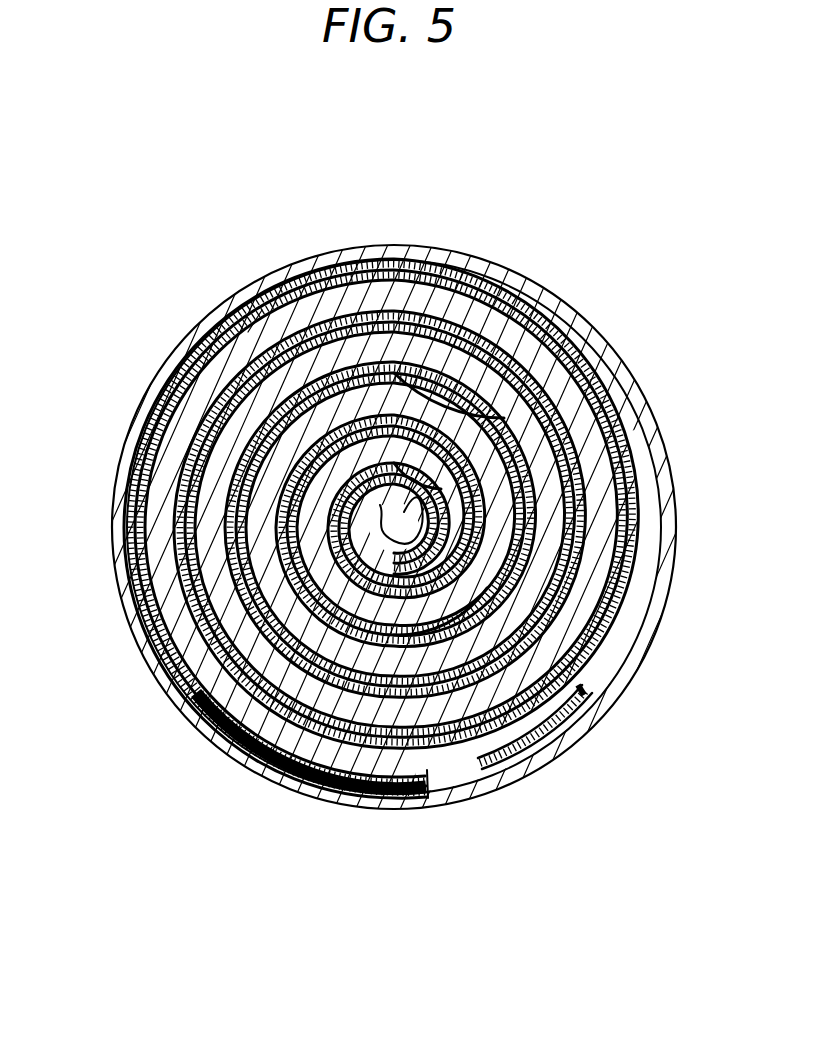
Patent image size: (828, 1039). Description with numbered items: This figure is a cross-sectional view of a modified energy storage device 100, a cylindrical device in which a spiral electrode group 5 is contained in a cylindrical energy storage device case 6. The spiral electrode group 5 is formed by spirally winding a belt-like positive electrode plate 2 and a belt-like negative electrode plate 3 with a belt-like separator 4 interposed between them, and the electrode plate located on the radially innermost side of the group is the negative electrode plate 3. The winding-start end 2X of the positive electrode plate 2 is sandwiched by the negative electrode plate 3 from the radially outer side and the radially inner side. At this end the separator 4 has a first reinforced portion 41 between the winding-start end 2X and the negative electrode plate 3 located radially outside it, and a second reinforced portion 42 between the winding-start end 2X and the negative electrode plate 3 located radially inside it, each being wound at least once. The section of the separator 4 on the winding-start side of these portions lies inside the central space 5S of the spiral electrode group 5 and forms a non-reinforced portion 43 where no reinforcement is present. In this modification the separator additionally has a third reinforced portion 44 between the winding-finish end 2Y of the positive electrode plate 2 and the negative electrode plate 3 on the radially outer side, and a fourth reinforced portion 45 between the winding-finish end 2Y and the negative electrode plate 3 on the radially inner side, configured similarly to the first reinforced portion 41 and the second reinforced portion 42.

The energy storage device 100 is at (158, 206).
The spiral electrode group 5 is at (455, 174).
The positive electrode plate 2 is at (322, 305).
The negative electrode plate 3 is at (466, 317).
The separator 4 is at (400, 317).
The energy storage device case 6 is at (133, 422).
The first reinforced portion 41 is at (467, 397).
The second reinforced portion 42 is at (425, 470).
The non-reinforced portion 43 is at (495, 563).
The third reinforced portion 44 is at (393, 790).
The fourth reinforced portion 45 is at (502, 733).
The winding-start end 2X is at (250, 330).
The winding-finish end 2Y is at (427, 793).
The central space 5S is at (385, 518).